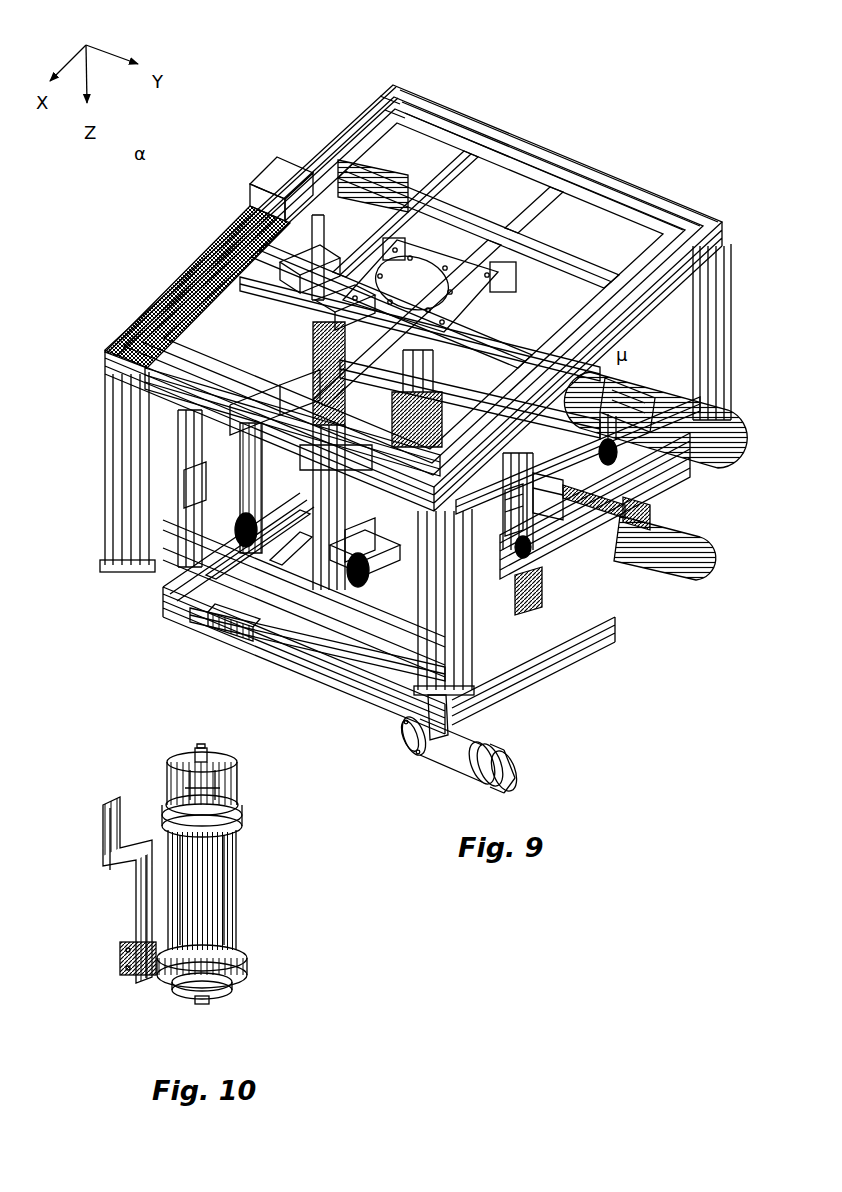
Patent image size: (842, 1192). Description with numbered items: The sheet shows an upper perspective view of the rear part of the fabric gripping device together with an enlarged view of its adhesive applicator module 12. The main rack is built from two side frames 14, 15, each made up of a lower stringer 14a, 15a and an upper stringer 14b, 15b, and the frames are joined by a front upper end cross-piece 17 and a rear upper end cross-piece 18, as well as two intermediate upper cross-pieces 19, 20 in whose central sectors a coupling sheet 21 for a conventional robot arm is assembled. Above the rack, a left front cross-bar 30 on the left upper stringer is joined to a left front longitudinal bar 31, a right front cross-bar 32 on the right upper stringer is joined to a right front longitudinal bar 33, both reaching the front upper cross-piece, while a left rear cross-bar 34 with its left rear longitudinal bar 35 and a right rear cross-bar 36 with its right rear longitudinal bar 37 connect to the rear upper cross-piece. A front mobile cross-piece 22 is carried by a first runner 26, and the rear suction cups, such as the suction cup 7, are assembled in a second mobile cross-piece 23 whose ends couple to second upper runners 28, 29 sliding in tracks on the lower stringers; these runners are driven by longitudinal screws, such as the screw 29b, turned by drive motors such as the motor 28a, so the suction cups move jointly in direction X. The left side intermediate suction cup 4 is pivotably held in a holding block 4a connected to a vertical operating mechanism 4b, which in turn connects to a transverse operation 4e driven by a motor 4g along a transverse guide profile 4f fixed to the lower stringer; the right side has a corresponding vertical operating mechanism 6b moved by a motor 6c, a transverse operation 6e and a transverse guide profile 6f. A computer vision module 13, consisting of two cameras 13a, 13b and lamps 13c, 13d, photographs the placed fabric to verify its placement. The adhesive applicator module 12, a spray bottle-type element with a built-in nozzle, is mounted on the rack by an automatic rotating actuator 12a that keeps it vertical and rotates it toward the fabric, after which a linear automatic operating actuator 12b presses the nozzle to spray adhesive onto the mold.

In FIG. 9, the left side intermediate suction cup 4 is at (516, 547).
In FIG. 9, the holding block 4a is at (506, 511).
In FIG. 9, the vertical operating mechanism 4b is at (534, 457).
In FIG. 9, the transverse operation 4e is at (545, 492).
In FIG. 9, the transverse guide profile 4f is at (568, 515).
In FIG. 9, the motor 4g is at (668, 540).
In FIG. 9, the vertical operating mechanism 6b is at (332, 417).
In FIG. 9, the motor 6c is at (335, 305).
In FIG. 9, the transverse operation 6e is at (290, 395).
In FIG. 9, the transverse guide profile 6f is at (188, 468).
In FIG. 9, the rear suction cup 7 is at (600, 455).
In FIG. 9, the adhesive applicator module 12 is at (463, 757).
In FIG. 10, the adhesive applicator module 12 is at (235, 921).
In FIG. 9, the automatic rotating actuator 12a is at (440, 725).
In FIG. 10, the automatic rotating actuator 12a is at (125, 957).
In FIG. 9, the automatic operating actuator 12b is at (513, 768).
In FIG. 10, the automatic operating actuator 12b is at (203, 757).
In FIG. 9, the computer vision module 13 is at (192, 614).
In FIG. 9, the camera 13a is at (237, 638).
In FIG. 9, the camera 13b is at (363, 567).
In FIG. 9, the lamp 13c is at (240, 637).
In FIG. 9, the lamp 13d is at (283, 587).
In FIG. 9, the side frame 14 is at (736, 276).
In FIG. 9, the lower stringer 14a is at (487, 677).
In FIG. 9, the upper stringer 14b is at (700, 298).
In FIG. 9, the side frame 15 is at (97, 336).
In FIG. 9, the lower stringer 15a is at (150, 565).
In FIG. 9, the upper stringer 15b is at (300, 143).
In FIG. 9, the front upper end cross-piece 17 is at (625, 185).
In FIG. 9, the rear upper end cross-piece 18 is at (160, 393).
In FIG. 9, the intermediate upper cross-piece 19 is at (318, 215).
In FIG. 9, the intermediate upper cross-piece 20 is at (280, 262).
In FIG. 9, the coupling sheet 21 is at (448, 262).
In FIG. 9, the front mobile cross-piece 22 is at (648, 374).
In FIG. 9, the second mobile cross-piece 23 is at (387, 560).
In FIG. 9, the first runner 26 is at (733, 443).
In FIG. 9, the second upper runner 28 is at (518, 640).
In FIG. 9, the drive motor 28a is at (500, 655).
In FIG. 9, the second upper runner 29 is at (183, 503).
In FIG. 9, the longitudinal screw 29b is at (232, 438).
In FIG. 9, the left front cross-bar 30 is at (560, 257).
In FIG. 9, the left front longitudinal bar 31 is at (553, 195).
In FIG. 9, the right front cross-bar 32 is at (390, 115).
In FIG. 9, the right front longitudinal bar 33 is at (452, 167).
In FIG. 9, the left rear cross-bar 34 is at (505, 235).
In FIG. 9, the left rear longitudinal bar 35 is at (393, 250).
In FIG. 9, the right rear cross-bar 36 is at (200, 300).
In FIG. 9, the right rear longitudinal bar 37 is at (100, 365).